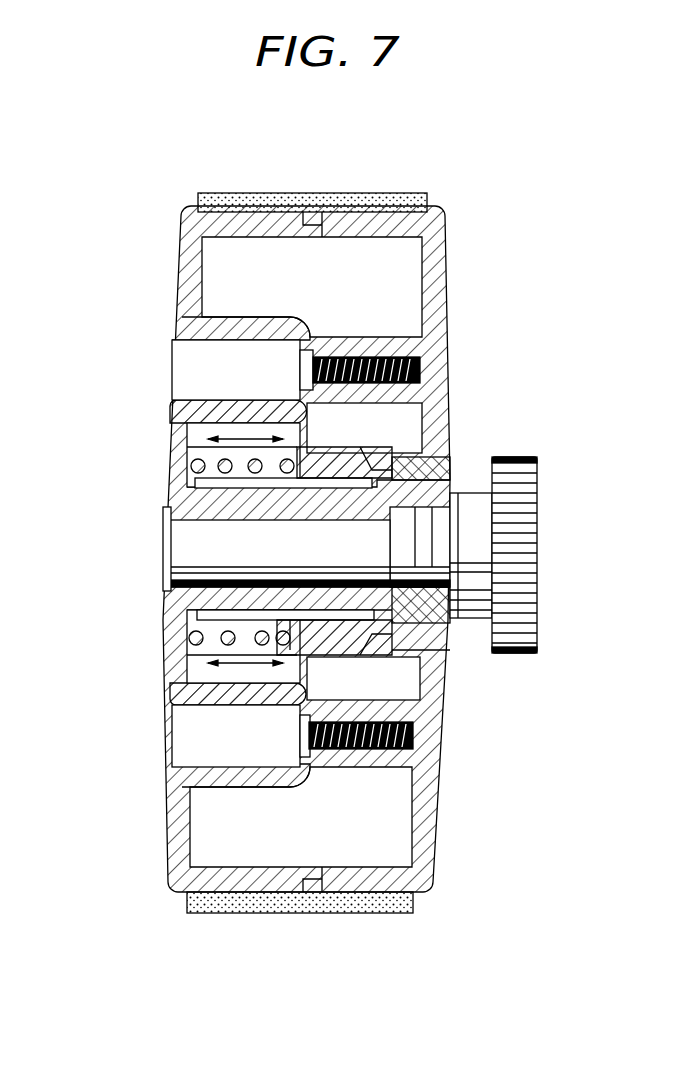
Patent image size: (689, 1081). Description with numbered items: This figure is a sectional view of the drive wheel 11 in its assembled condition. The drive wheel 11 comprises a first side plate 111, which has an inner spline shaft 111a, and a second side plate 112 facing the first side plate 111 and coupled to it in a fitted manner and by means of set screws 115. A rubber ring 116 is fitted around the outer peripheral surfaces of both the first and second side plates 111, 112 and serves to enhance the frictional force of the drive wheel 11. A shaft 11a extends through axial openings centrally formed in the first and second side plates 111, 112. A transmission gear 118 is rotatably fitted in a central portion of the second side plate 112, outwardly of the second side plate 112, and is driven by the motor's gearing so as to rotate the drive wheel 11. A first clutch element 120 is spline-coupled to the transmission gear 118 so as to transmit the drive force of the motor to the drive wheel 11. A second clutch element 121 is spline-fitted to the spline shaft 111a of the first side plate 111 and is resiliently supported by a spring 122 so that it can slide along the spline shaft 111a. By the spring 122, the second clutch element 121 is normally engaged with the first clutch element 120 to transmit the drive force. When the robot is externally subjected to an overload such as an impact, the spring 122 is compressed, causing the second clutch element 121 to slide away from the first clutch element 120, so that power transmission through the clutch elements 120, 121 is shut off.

The drive wheel 11 is at (394, 192).
The shaft 11a is at (200, 552).
The first side plate 111 is at (193, 274).
The spline shaft 111a is at (173, 505).
The second side plate 112 is at (442, 303).
The set screws 115 is at (300, 374).
The rubber ring 116 is at (277, 900).
The transmission gear 118 is at (520, 528).
The first clutch element 120 is at (440, 462).
The second clutch element 121 is at (337, 657).
The spring 122 is at (193, 446).